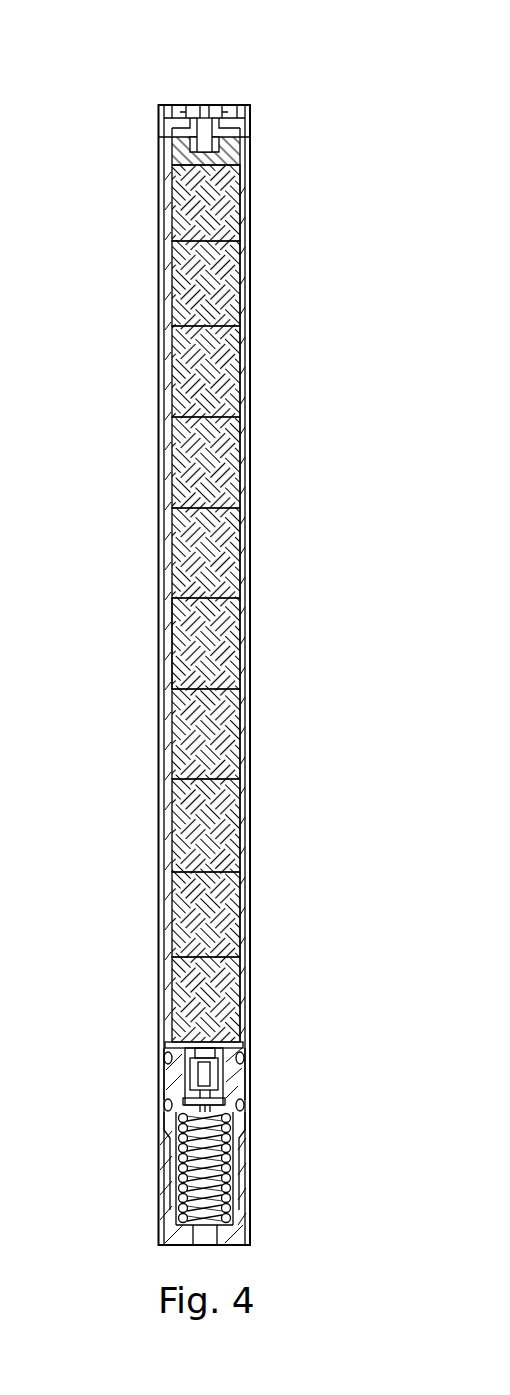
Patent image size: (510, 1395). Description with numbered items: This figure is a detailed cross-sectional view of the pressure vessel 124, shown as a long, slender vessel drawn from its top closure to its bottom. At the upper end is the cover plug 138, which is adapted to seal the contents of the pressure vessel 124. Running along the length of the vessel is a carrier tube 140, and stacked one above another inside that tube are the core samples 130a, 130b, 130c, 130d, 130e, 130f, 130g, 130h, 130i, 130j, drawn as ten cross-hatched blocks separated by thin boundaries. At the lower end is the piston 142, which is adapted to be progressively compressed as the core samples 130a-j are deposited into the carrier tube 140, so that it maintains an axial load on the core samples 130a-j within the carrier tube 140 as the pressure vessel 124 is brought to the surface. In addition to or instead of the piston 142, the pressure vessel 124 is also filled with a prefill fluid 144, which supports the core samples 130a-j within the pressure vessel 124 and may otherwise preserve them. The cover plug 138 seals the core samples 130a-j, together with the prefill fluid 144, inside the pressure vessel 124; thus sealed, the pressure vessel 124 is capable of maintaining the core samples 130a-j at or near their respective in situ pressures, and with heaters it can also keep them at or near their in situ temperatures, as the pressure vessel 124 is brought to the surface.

The pressure vessel 124 is at (315, 215).
The cover plug 138 is at (207, 112).
The core sample 130a is at (186, 201).
The core sample 130b is at (186, 286).
The core sample 130c is at (186, 381).
The core sample 130d is at (186, 449).
The core sample 130e is at (186, 556).
The core sample 130f is at (186, 641).
The core sample 130g is at (184, 743).
The core sample 130h is at (184, 836).
The core sample 130i is at (184, 928).
The core sample 130j is at (184, 990).
The carrier tube 140 is at (250, 362).
The prefill fluid 144 is at (220, 665).
The piston 142 is at (232, 1077).